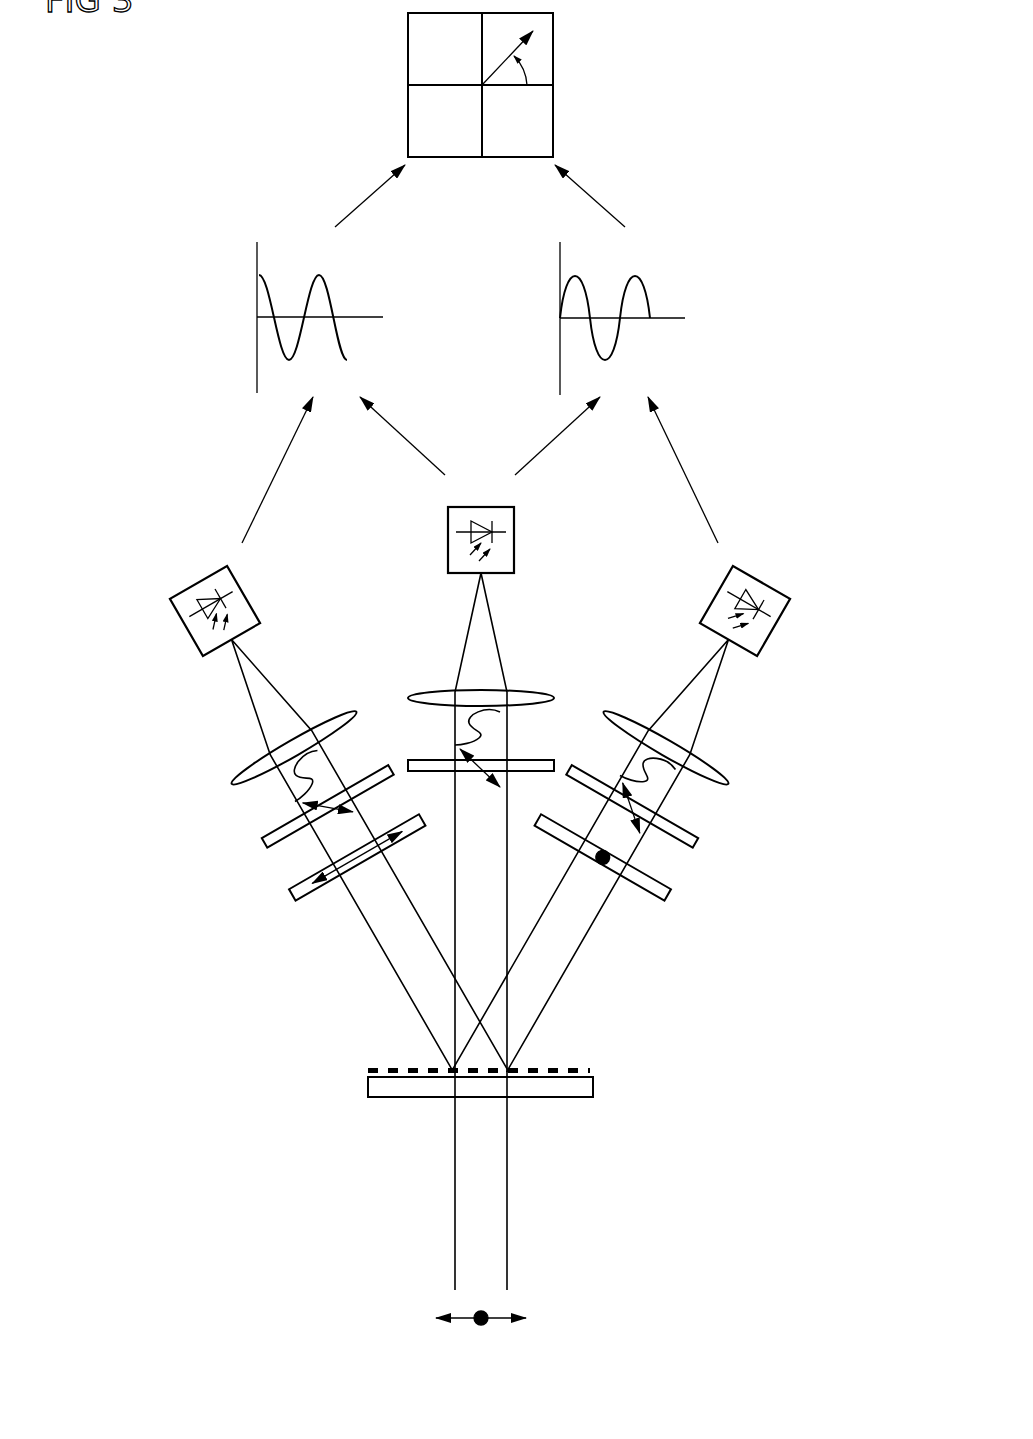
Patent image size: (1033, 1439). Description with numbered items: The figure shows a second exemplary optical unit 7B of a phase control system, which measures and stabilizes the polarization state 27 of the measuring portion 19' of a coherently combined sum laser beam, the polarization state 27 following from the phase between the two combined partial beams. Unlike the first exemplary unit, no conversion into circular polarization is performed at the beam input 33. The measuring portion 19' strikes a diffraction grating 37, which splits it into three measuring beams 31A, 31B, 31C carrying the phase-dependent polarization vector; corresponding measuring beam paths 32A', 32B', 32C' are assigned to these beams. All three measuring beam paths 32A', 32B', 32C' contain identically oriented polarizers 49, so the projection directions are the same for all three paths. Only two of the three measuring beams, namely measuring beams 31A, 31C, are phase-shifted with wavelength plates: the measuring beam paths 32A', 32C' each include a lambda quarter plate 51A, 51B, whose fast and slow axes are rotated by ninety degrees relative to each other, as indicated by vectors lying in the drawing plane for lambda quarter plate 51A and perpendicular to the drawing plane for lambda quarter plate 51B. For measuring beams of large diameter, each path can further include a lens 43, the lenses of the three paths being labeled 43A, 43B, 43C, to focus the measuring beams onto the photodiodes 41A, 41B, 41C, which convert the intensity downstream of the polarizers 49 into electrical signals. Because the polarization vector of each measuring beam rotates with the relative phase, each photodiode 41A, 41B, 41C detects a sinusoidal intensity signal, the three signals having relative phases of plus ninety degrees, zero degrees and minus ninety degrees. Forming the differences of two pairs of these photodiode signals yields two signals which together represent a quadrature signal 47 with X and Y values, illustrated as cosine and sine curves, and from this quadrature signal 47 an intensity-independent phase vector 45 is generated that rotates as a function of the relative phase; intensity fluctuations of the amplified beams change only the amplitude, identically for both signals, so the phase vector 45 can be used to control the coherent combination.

The optical unit 7B is at (103, 548).
The phase vector 45 is at (468, 62).
The quadrature signal 47 is at (245, 290).
The photodiode 41A is at (188, 630).
The photodiode 41B is at (517, 540).
The photodiode 41C is at (778, 630).
The measuring beam path 32A' is at (304, 831).
The measuring beam path 32B' is at (490, 802).
The measuring beam path 32C' is at (657, 831).
The lens 43A is at (296, 788).
The lens 43B is at (455, 721).
The lens 43C is at (657, 747).
The lens 43 is at (758, 757).
The polarizer 49 is at (263, 842).
The lambda quarter plate 51A is at (293, 897).
The lambda quarter plate 51B is at (668, 895).
The measuring beam 31A is at (415, 1012).
The measuring beam 31B is at (468, 795).
The measuring beam 31C is at (548, 1010).
The diffraction grating 37 is at (596, 1085).
The measuring portion 19' is at (443, 1193).
The polarization state 27 is at (505, 1316).
The beam input 33 is at (410, 1322).